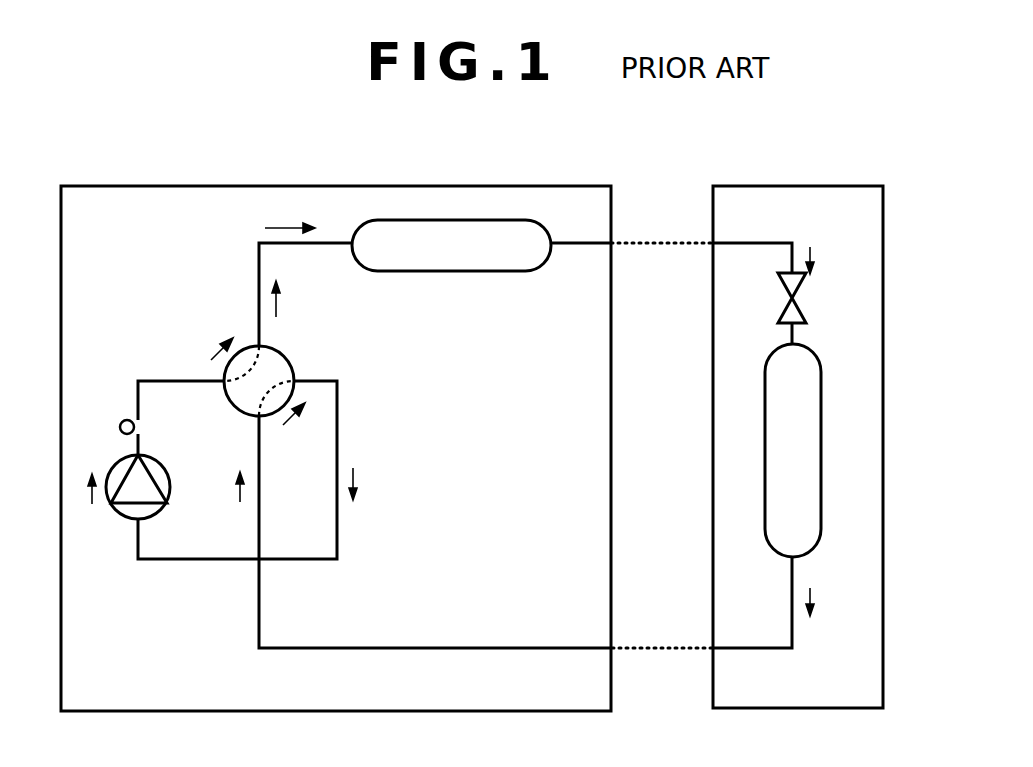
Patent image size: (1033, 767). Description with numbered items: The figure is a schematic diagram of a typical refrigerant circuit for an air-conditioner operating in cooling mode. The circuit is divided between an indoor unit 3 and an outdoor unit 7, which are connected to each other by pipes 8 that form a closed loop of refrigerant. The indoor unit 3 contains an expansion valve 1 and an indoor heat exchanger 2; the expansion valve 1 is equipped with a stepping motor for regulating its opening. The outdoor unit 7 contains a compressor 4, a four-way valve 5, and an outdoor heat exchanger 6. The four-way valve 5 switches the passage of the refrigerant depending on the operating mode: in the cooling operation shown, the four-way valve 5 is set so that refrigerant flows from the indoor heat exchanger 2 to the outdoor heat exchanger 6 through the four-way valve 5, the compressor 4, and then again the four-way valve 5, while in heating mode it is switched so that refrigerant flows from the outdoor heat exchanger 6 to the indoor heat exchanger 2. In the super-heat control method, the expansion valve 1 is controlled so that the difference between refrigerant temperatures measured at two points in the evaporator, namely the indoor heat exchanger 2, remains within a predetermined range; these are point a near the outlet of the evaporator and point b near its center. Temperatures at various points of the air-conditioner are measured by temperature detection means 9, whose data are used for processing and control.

The expansion valve 1 is at (800, 292).
The indoor heat exchanger 2 is at (810, 418).
The indoor unit 3 is at (848, 205).
The compressor 4 is at (117, 505).
The four-way valve 5 is at (287, 368).
The outdoor heat exchanger 6 is at (514, 260).
The outdoor unit 7 is at (557, 203).
The pipes 8 is at (664, 242).
The temperature detection means 9 is at (120, 425).